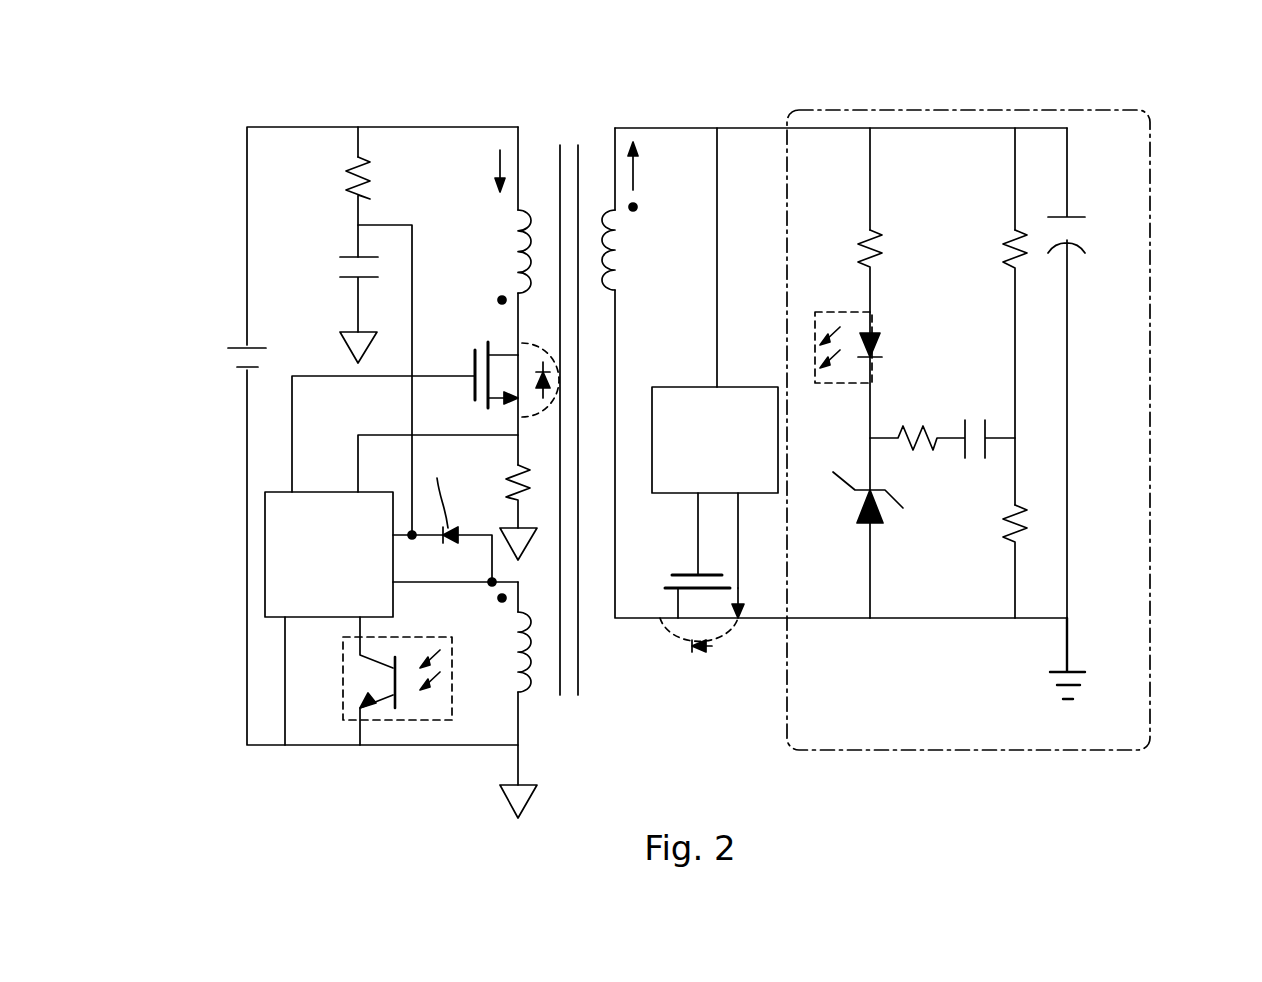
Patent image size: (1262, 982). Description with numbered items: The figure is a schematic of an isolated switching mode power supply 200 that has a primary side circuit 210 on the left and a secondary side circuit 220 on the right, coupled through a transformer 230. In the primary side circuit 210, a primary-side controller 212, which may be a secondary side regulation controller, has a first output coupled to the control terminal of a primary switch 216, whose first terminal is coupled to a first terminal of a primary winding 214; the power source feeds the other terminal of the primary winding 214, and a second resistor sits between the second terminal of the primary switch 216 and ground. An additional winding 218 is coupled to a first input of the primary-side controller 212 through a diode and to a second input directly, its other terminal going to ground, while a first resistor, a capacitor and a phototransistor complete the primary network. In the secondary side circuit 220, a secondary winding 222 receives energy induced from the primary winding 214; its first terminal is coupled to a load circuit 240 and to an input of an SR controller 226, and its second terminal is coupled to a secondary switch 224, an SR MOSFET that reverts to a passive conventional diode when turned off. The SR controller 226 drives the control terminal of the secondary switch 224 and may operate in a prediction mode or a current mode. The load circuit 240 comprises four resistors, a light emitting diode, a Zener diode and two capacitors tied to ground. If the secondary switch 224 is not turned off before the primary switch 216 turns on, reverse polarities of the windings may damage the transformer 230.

The isolated switching mode power supply 200 is at (80, 65).
The primary side circuit 210 is at (208, 122).
The primary-side controller 212 is at (265, 532).
The primary winding 214 is at (504, 231).
The primary switch 216 is at (474, 362).
The additional winding 218 is at (535, 688).
The secondary side circuit 220 is at (1193, 120).
The secondary winding 222 is at (626, 272).
The secondary switch 224 is at (682, 572).
The SR controller 226 is at (681, 387).
The transformer 230 is at (588, 120).
The load circuit 240 is at (1152, 284).